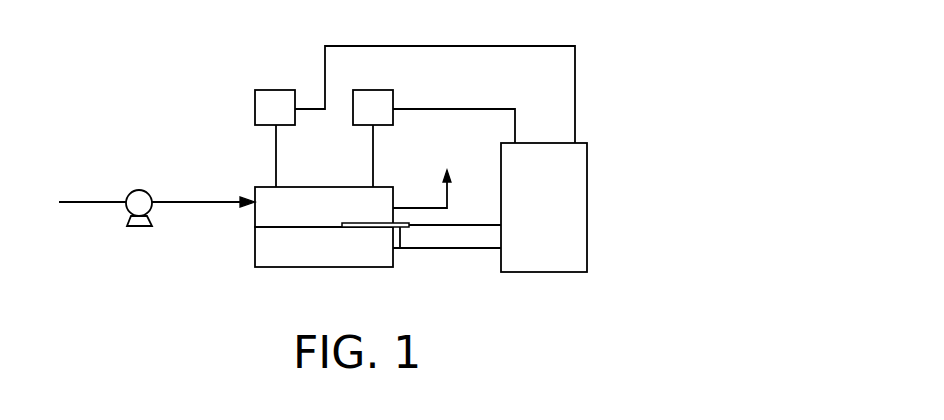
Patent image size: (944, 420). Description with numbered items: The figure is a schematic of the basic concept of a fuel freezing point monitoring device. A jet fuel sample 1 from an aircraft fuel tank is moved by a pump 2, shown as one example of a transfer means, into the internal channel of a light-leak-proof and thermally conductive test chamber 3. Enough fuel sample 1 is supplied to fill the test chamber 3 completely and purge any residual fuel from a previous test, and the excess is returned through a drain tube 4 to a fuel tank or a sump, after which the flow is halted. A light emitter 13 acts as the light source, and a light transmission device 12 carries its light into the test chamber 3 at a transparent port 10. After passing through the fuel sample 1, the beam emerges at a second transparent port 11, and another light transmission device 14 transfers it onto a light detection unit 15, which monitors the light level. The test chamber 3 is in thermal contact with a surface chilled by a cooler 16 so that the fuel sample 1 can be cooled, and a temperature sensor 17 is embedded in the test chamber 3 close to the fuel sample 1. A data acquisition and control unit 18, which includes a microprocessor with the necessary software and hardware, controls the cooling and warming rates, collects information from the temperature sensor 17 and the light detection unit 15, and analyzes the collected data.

The jet fuel sample 1 is at (102, 202).
The pump 2 is at (138, 190).
The test chamber 3 is at (268, 208).
The drain tube 4 is at (445, 197).
The transparent port 10 is at (266, 184).
The transparent port 11 is at (368, 184).
The light transmission device 12 is at (274, 153).
The light emitter 13 is at (268, 110).
The light transmission device 14 is at (376, 150).
The light detection unit 15 is at (374, 100).
The cooler 16 is at (348, 247).
The temperature sensor 17 is at (402, 232).
The data acquisition and control unit 18 is at (545, 250).